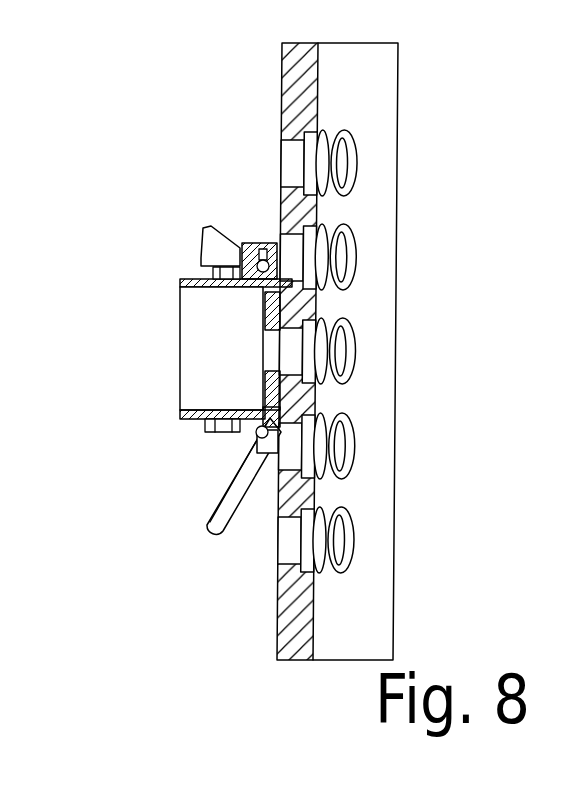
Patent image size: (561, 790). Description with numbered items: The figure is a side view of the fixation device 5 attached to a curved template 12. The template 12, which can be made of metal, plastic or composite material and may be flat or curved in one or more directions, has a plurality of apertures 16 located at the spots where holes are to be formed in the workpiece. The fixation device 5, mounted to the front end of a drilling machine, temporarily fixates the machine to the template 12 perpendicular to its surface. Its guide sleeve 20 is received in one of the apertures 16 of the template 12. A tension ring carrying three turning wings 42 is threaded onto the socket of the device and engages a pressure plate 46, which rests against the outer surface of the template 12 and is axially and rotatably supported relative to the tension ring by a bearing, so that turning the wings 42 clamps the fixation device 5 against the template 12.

The fixation device 5 is at (184, 268).
The template 12 is at (377, 105).
The aperture 16 is at (297, 167).
The guide sleeve 20 is at (283, 337).
The turning wing 42 is at (224, 537).
The pressure plate 46 is at (284, 432).